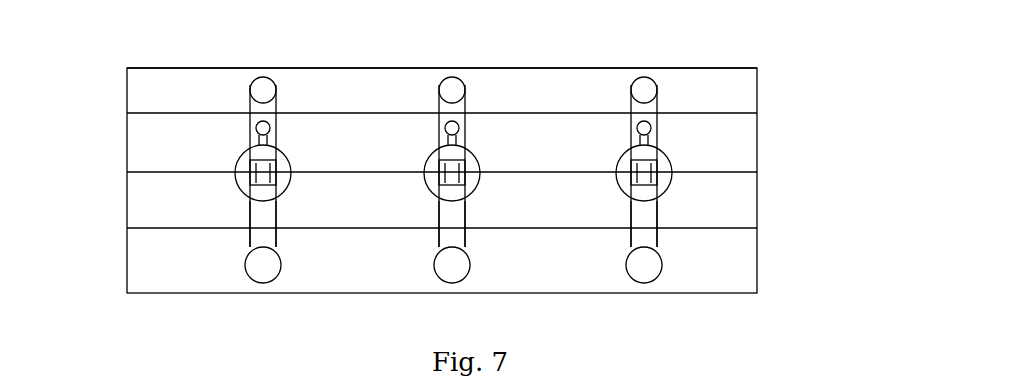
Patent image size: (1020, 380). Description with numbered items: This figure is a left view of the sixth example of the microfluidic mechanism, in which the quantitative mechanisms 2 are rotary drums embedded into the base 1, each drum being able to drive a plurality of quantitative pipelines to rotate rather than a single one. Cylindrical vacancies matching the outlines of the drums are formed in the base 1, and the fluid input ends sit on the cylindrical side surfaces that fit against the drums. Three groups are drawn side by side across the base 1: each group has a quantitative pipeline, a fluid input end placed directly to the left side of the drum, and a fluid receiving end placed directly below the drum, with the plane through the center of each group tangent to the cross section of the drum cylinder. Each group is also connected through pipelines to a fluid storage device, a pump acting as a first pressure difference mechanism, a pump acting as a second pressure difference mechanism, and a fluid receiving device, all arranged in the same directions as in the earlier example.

The base 1 is at (724, 99).
The quantitative mechanism 2 is at (181, 141).